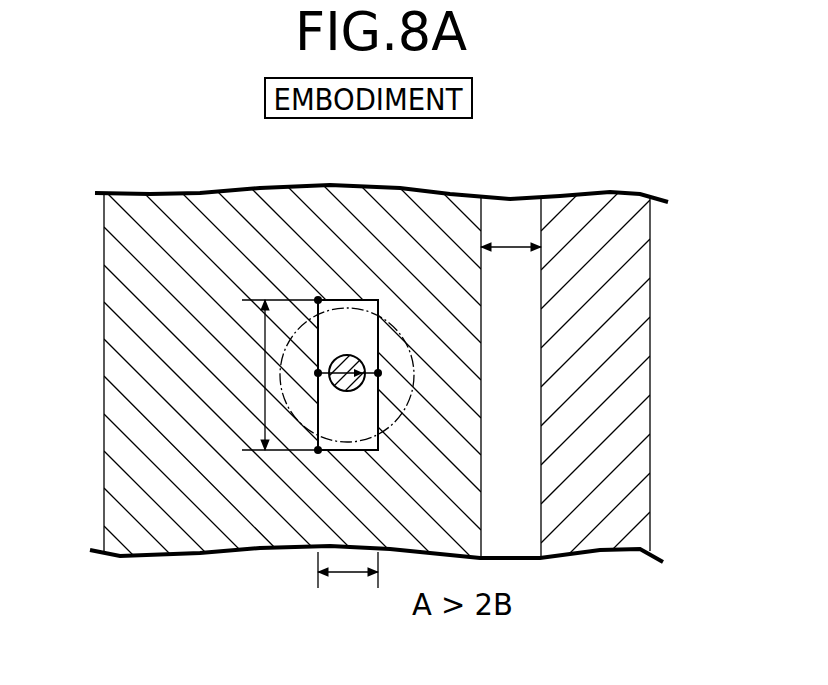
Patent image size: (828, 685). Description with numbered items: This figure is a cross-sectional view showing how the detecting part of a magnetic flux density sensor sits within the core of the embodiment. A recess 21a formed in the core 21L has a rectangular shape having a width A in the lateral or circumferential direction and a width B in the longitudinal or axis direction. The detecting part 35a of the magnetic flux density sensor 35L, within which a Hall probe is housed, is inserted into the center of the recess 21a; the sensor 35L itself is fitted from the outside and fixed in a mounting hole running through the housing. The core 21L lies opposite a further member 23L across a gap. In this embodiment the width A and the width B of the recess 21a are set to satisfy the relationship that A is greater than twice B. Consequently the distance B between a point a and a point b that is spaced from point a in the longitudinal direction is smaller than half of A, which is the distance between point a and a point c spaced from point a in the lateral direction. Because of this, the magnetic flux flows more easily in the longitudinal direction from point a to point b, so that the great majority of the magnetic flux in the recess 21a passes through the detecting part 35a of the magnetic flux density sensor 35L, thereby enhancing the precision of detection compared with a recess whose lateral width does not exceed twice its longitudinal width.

The core 21L is at (225, 218).
The left-side facing member 23L is at (573, 208).
The recess 21a is at (373, 328).
The detecting part 35a is at (379, 414).
The magnetic flux density sensor 35L is at (412, 395).
The point a is at (316, 374).
The point b is at (381, 374).
The point c is at (316, 298).
The width in the lateral direction A is at (277, 375).
The width in the longitudinal direction B is at (348, 580).